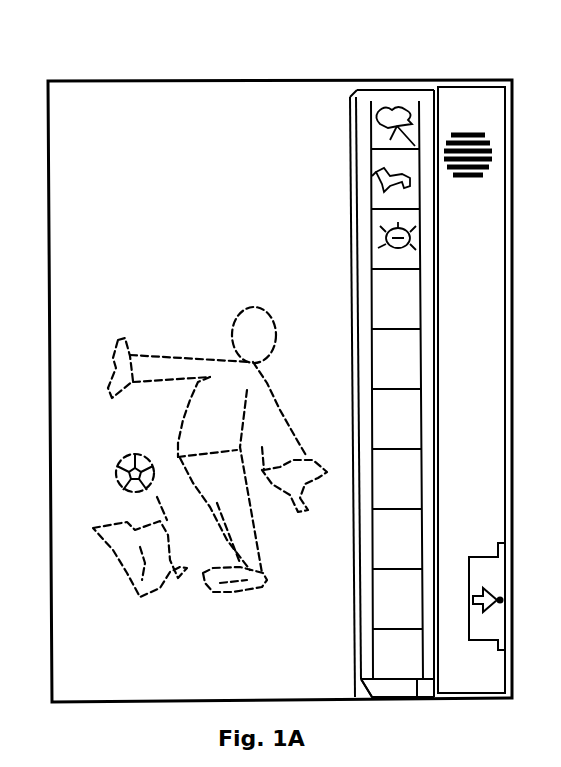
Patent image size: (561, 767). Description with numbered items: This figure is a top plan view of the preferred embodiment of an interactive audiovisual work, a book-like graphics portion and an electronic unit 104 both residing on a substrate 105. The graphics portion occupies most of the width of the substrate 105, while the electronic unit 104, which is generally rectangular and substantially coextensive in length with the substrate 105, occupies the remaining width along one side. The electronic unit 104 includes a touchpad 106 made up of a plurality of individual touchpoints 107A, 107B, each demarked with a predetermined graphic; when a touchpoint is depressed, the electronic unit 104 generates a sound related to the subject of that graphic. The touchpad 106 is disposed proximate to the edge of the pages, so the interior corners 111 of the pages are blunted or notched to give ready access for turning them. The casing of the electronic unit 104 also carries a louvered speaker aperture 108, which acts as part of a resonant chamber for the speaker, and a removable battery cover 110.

The electronic unit 104 is at (513, 72).
The substrate 105 is at (508, 145).
The touchpad 106 is at (418, 693).
The touchpoint 107A is at (388, 671).
The touchpoint 107B is at (388, 618).
The louvered speaker aperture 108 is at (483, 169).
The removable battery cover 110 is at (488, 556).
The interior corner 111 is at (368, 693).